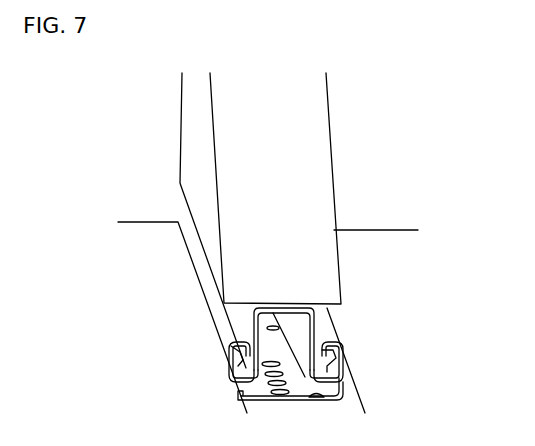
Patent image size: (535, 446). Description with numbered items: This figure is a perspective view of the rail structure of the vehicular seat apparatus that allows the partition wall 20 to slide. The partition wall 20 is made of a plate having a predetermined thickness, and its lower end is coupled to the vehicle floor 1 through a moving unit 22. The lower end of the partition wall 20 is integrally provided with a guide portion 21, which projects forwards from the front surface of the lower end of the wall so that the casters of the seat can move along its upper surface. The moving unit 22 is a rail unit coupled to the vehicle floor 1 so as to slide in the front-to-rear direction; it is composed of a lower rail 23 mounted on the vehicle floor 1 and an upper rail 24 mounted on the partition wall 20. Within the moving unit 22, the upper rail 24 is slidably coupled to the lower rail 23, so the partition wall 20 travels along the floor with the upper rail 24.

The vehicle floor 1 is at (152, 360).
The partition wall 20 is at (146, 187).
The guide portion 21 is at (313, 167).
The moving unit 22 is at (371, 354).
The lower rail 23 is at (345, 387).
The upper rail 24 is at (314, 326).